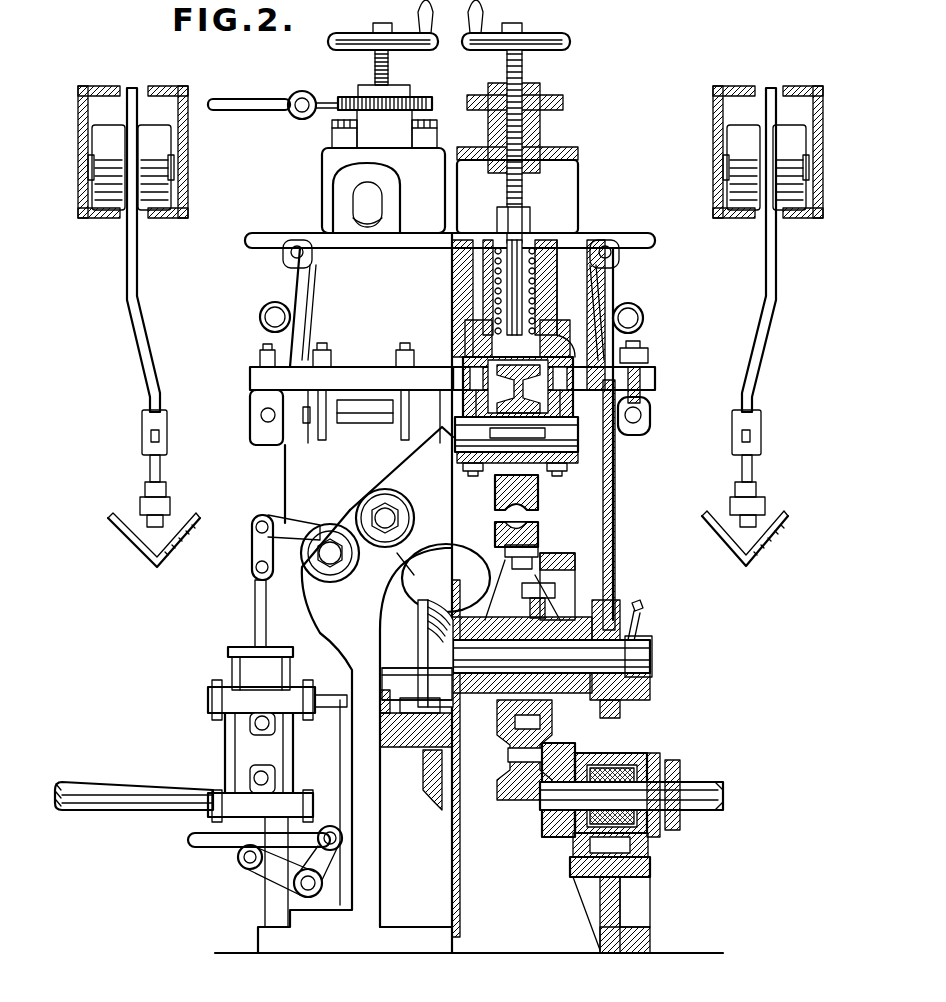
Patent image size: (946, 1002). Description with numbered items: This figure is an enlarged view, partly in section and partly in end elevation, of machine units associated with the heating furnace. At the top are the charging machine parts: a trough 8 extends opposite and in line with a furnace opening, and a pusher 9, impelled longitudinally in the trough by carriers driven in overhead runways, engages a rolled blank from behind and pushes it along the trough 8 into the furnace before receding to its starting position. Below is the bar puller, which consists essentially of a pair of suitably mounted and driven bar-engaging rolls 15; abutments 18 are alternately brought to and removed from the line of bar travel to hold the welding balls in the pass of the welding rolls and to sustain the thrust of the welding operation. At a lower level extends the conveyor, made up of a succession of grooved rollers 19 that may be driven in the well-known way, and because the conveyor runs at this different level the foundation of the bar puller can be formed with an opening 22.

The trough 8 is at (187, 550).
The pusher 9 is at (140, 507).
The bar-engaging rolls 15 is at (538, 492).
The abutments 18 is at (347, 513).
The grooved rollers 19 is at (432, 652).
The opening 22 is at (446, 578).